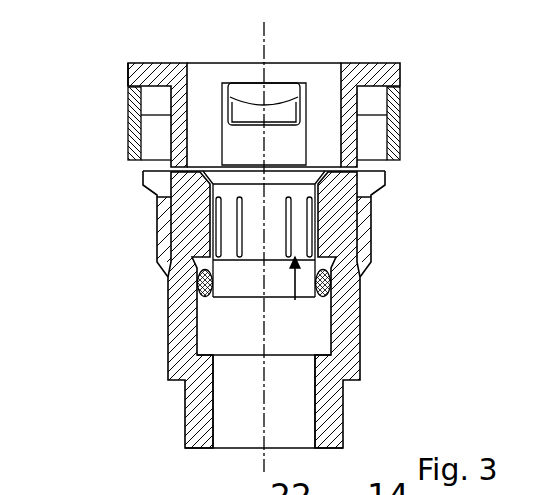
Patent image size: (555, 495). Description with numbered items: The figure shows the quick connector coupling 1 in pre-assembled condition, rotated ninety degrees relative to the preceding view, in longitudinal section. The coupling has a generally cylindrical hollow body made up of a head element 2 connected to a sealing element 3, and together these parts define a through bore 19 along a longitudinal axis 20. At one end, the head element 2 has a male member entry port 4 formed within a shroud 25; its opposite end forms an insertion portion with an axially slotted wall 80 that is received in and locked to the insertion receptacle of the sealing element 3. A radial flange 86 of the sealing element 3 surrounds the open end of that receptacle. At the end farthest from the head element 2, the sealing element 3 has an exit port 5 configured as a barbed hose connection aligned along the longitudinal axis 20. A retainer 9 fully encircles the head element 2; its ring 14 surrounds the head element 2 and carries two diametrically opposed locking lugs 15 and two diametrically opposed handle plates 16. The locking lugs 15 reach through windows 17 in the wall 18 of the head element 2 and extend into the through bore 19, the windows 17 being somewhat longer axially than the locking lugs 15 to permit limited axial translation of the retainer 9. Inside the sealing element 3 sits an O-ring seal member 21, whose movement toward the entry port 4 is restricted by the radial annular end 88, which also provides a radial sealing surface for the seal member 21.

The quick connector coupling 1 is at (97, 368).
The head element 2 is at (415, 62).
The sealing element 3 is at (396, 350).
The male member entry port 4 is at (320, 63).
The exit port 5 is at (240, 435).
The retainer 9 is at (430, 125).
The ring 14 is at (400, 143).
The locking lugs 15 is at (242, 107).
The handle plates 16 is at (128, 98).
The windows 17 is at (218, 97).
The wall 18 is at (170, 128).
The through bore 19 is at (307, 408).
The longitudinal axis 20 is at (266, 398).
The seal member 21 is at (200, 282).
The shroud 25 is at (130, 67).
The axially slotted wall 80 is at (297, 232).
The radial flange 86 is at (383, 180).
The radial annular end 88 is at (295, 300).